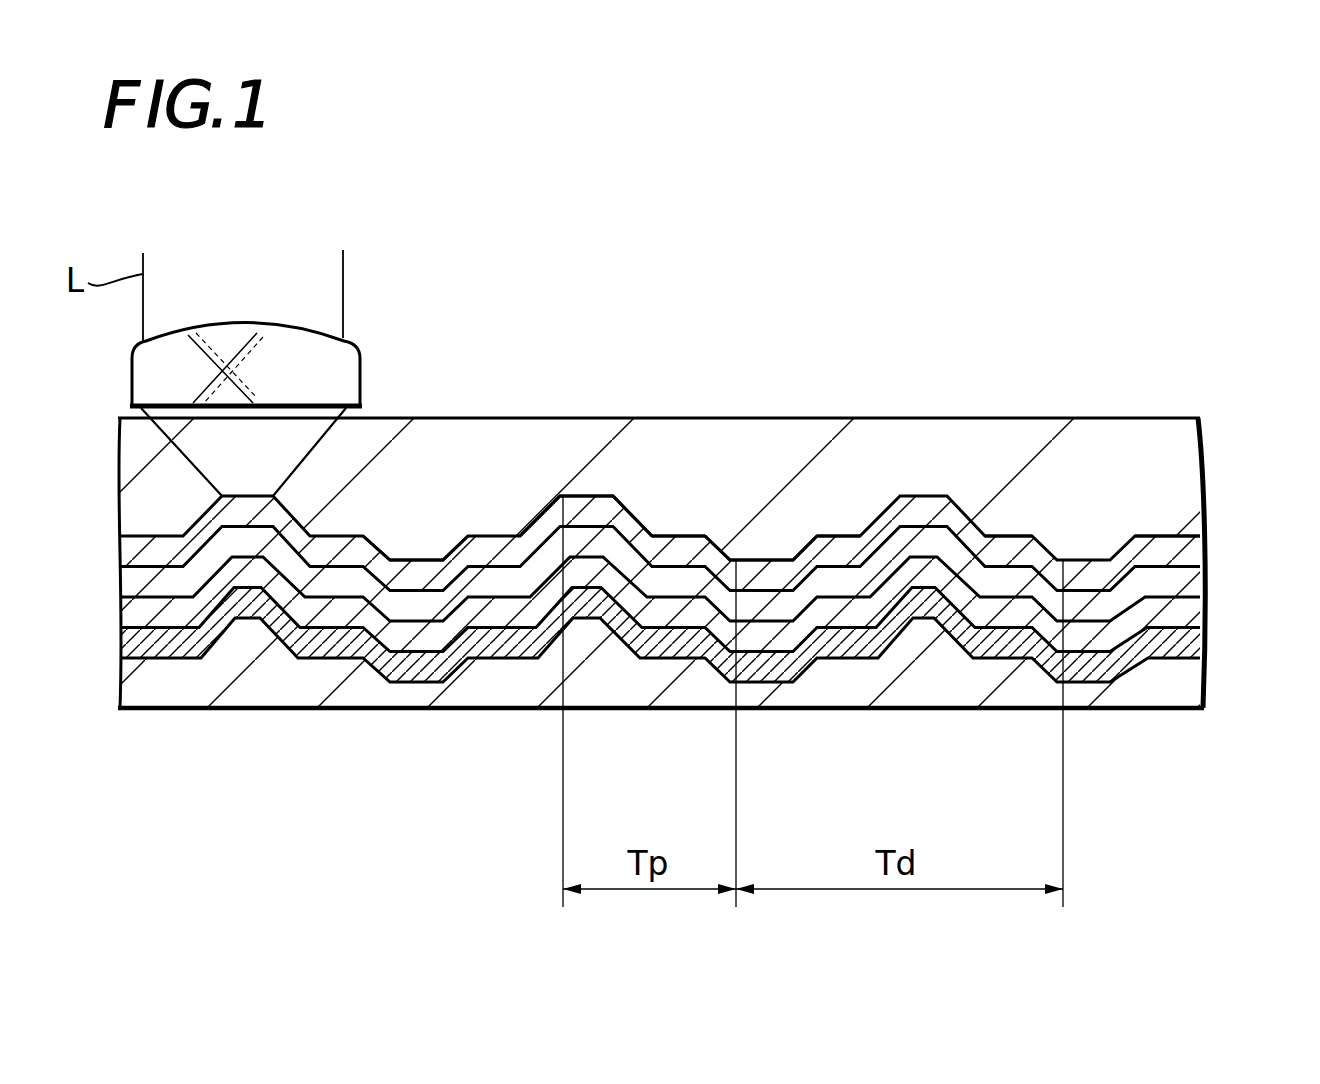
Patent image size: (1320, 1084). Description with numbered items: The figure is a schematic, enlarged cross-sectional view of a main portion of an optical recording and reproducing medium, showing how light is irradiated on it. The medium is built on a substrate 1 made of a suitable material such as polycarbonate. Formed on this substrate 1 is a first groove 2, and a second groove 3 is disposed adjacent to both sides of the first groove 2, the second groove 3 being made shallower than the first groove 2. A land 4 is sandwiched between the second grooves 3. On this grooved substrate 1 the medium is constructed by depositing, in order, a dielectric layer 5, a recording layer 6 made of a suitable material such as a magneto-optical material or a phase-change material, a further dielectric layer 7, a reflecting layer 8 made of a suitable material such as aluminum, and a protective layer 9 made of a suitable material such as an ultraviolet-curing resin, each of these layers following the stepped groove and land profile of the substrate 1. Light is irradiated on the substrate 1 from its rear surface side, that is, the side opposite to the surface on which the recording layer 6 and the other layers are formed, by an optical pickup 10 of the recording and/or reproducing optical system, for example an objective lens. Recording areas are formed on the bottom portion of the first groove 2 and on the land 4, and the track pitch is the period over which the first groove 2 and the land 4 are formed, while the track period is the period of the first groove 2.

The substrate 1 is at (1170, 453).
The first groove 2 is at (594, 497).
The second groove 3 is at (683, 537).
The land 4 is at (410, 560).
The dielectric layer 5 is at (1167, 547).
The recording layer 6 is at (1170, 577).
The dielectric layer 7 is at (1193, 611).
The reflecting layer 8 is at (1195, 646).
The protective layer 9 is at (1173, 682).
The optical pickup 10 is at (247, 322).